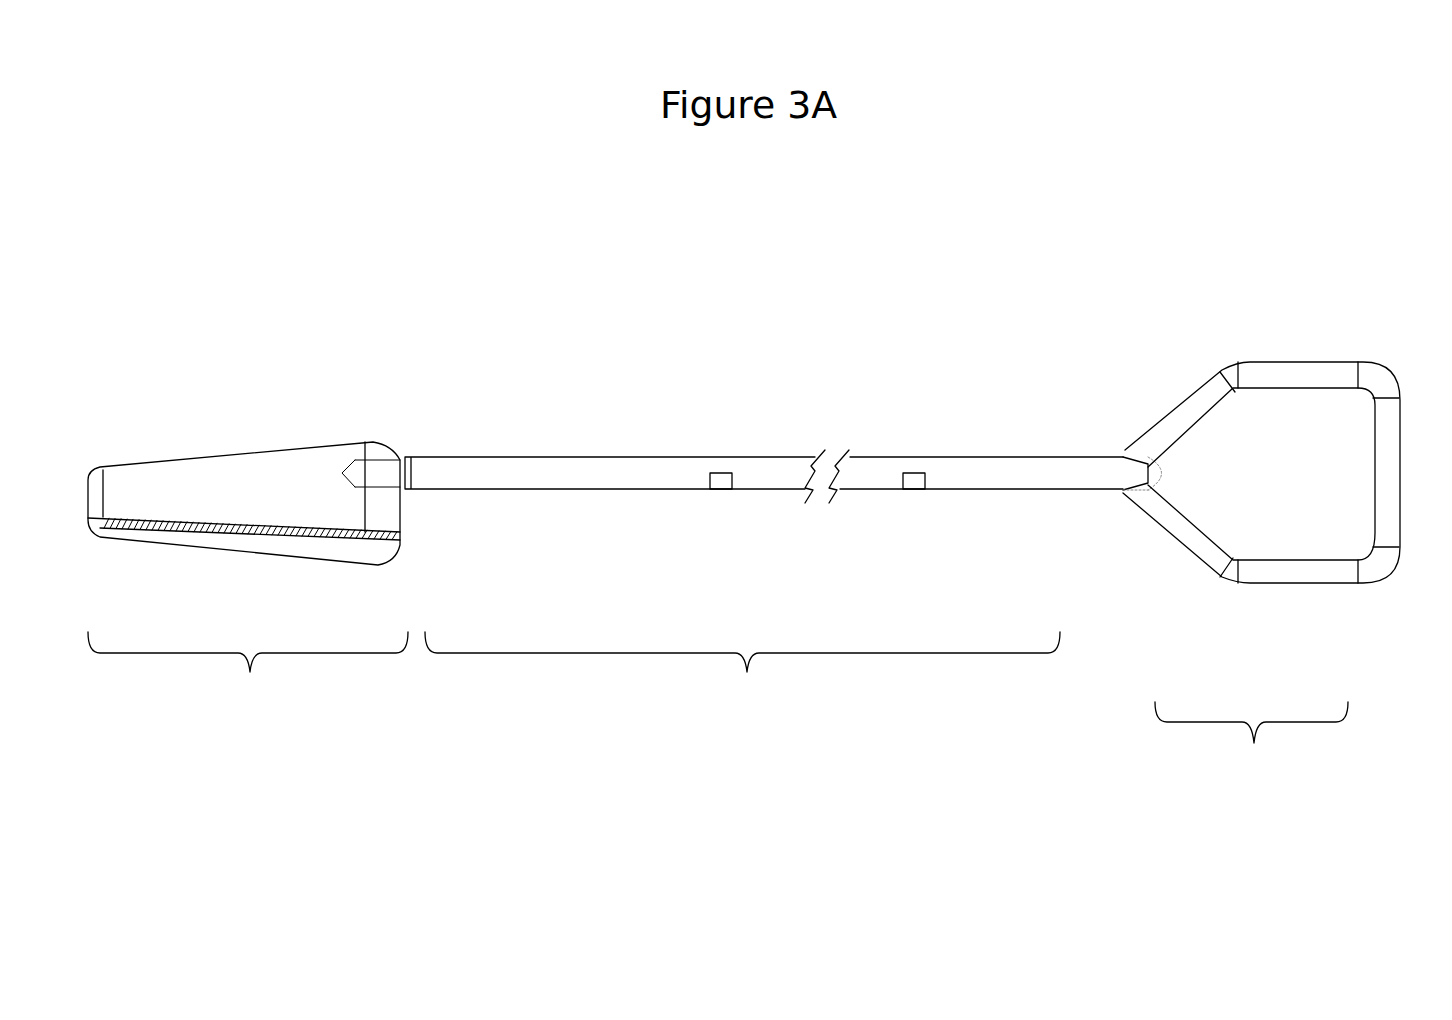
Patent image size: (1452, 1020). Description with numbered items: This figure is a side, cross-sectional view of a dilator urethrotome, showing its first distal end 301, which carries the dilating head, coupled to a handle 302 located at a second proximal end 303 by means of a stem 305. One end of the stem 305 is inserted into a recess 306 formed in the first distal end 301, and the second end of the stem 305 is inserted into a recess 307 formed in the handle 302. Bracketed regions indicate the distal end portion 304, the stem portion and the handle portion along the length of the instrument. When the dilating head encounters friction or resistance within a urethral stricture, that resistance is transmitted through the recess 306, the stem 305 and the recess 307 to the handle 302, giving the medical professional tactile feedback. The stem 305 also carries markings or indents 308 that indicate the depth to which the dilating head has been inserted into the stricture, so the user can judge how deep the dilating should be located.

The first distal end 301 is at (295, 447).
The handle 302 is at (1298, 527).
The second proximal end 303 is at (1251, 744).
The handle portion 304 is at (248, 673).
The stem 305 is at (764, 582).
The recess 306 is at (380, 466).
The recess 307 is at (1158, 464).
The markings or indents 308 is at (717, 463).